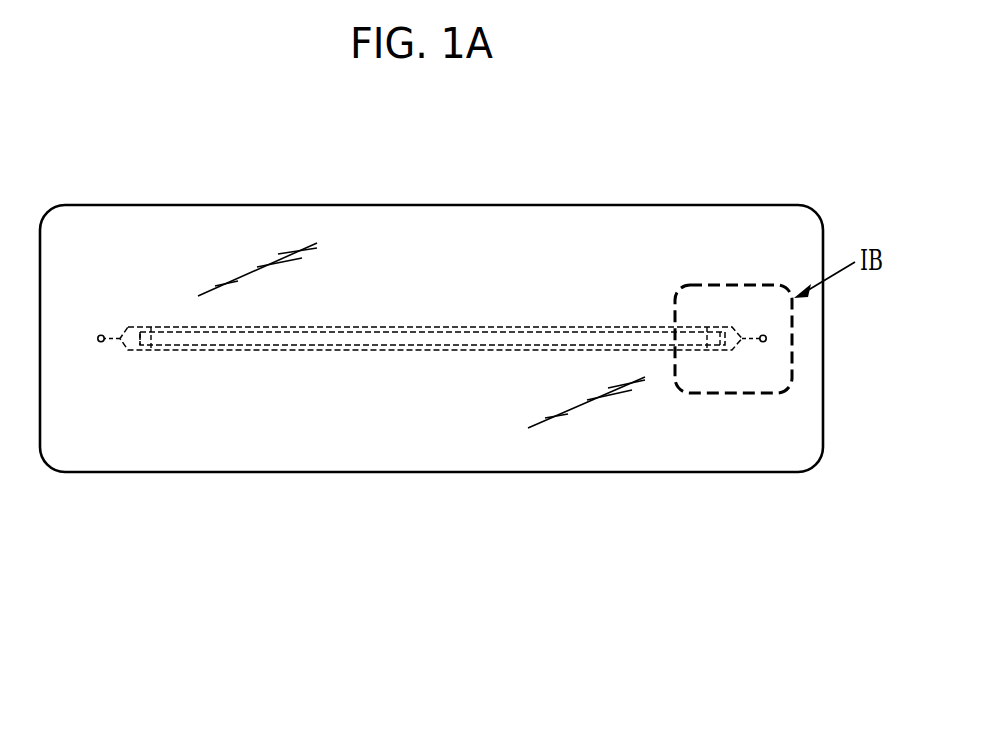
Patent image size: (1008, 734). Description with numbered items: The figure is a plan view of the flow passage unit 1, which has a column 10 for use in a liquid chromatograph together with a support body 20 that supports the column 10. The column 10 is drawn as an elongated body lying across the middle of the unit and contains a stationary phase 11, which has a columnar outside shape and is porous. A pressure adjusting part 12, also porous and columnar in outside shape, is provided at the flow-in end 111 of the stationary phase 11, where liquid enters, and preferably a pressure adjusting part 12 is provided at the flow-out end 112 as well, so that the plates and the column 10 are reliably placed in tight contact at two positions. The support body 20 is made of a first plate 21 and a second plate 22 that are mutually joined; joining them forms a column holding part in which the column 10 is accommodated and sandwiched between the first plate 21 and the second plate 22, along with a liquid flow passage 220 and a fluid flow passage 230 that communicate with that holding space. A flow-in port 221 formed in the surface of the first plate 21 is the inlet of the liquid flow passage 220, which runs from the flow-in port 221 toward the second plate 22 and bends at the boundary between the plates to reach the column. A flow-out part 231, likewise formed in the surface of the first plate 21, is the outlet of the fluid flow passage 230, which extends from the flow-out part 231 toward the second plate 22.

The flow passage unit 1 is at (798, 161).
The column 10 is at (412, 325).
The stationary phase 11 is at (412, 346).
The pressure adjusting part 12 is at (151, 350).
The flow-in end 111 is at (720, 332).
The flow-out end 112 is at (151, 327).
The support body 20 is at (560, 445).
The first plate 21 is at (431, 338).
The second plate 22 is at (431, 338).
The liquid flow passage 220 is at (750, 336).
The flow-in port 221 is at (763, 342).
The fluid flow passage 230 is at (118, 333).
The flow-out part 231 is at (100, 342).